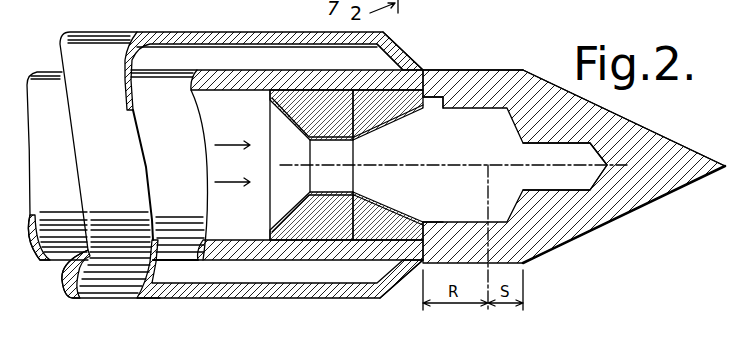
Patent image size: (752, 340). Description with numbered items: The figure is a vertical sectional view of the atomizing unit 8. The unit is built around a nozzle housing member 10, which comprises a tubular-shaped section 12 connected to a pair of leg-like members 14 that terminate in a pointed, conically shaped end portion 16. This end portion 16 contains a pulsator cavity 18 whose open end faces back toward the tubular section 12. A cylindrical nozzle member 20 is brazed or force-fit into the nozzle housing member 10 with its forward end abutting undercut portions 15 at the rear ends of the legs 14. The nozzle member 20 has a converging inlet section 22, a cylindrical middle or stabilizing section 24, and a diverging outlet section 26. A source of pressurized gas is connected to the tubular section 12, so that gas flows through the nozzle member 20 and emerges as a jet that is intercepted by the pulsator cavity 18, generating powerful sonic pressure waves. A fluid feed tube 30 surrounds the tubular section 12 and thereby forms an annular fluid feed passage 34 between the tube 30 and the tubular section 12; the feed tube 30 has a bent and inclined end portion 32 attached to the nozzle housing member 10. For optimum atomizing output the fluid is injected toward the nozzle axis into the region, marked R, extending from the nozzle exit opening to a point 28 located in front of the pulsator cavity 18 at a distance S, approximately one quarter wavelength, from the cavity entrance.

The atomizing unit 8 is at (369, 308).
The nozzle housing member 10 is at (449, 55).
The tubular-shaped section 12 is at (183, 72).
The leg-like members 14 is at (500, 70).
The undercut portions 15 is at (432, 100).
The conically shaped end portion 16 is at (670, 137).
The pulsator cavity 18 is at (523, 153).
The cylindrical nozzle member 20 is at (268, 105).
The converging inlet section 22 is at (302, 160).
The cylindrical middle or stabilizing section 24 is at (345, 186).
The diverging outlet section 26 is at (402, 157).
The point 28 is at (488, 164).
The fluid feed tube 30 is at (240, 33).
The bent and inclined end portion 32 is at (403, 60).
The annular fluid feed passage 34 is at (148, 62).